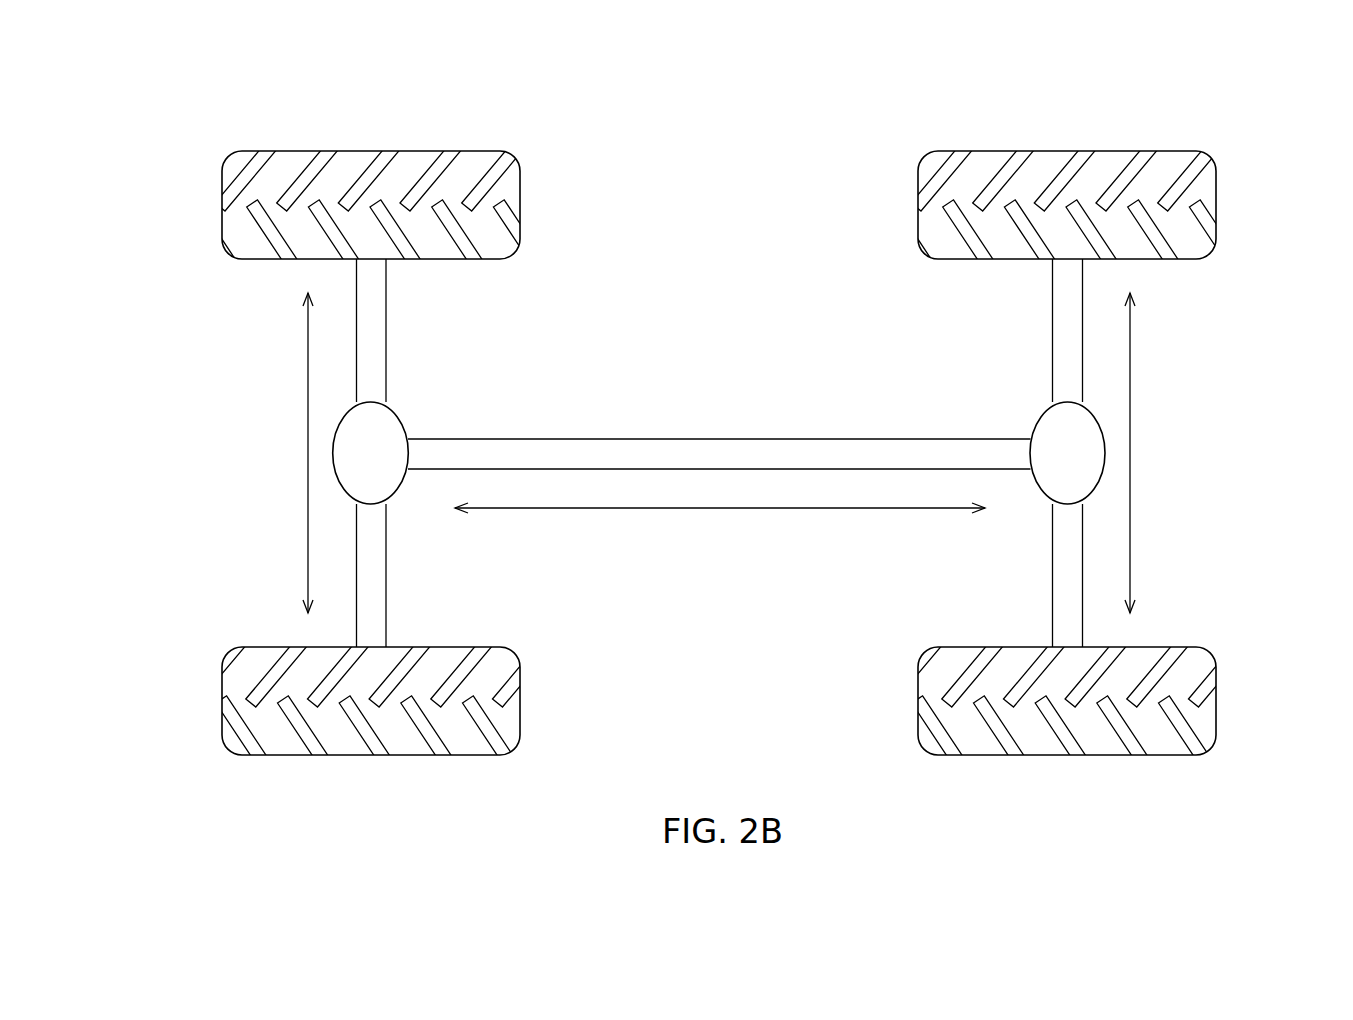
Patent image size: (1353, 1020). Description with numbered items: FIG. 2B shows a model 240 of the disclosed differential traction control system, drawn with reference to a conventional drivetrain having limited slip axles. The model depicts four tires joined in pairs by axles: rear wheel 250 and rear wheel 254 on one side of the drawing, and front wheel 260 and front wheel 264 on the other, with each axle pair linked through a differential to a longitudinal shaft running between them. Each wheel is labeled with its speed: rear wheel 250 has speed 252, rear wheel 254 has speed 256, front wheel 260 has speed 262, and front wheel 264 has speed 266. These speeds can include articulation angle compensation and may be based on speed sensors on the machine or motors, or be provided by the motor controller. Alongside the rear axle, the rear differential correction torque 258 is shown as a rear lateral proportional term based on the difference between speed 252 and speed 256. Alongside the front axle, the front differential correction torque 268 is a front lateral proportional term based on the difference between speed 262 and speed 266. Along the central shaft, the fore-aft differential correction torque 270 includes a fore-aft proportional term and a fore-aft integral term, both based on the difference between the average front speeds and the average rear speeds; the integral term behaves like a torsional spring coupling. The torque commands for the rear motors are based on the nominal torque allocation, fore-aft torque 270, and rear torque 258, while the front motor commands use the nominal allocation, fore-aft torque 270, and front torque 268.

The model 240 is at (698, 122).
The rear wheel 250 is at (224, 160).
The rear wheel speed 252 is at (358, 95).
The rear wheel 254 is at (227, 750).
The rear wheel speed 256 is at (370, 802).
The rear differential correction torque 258 is at (213, 468).
The front left wheel 260 is at (1214, 176).
The front wheel speed 262 is at (1067, 95).
The front wheel 264 is at (1213, 745).
The front wheel speed 266 is at (1048, 802).
The front differential correction torque 268 is at (1202, 465).
The fore-aft differential correction torque 270 is at (753, 548).